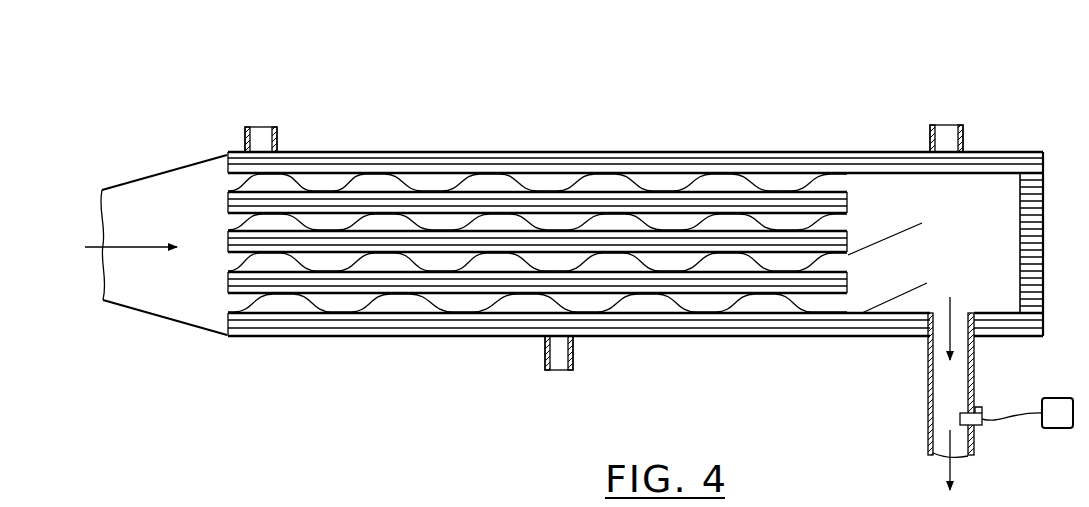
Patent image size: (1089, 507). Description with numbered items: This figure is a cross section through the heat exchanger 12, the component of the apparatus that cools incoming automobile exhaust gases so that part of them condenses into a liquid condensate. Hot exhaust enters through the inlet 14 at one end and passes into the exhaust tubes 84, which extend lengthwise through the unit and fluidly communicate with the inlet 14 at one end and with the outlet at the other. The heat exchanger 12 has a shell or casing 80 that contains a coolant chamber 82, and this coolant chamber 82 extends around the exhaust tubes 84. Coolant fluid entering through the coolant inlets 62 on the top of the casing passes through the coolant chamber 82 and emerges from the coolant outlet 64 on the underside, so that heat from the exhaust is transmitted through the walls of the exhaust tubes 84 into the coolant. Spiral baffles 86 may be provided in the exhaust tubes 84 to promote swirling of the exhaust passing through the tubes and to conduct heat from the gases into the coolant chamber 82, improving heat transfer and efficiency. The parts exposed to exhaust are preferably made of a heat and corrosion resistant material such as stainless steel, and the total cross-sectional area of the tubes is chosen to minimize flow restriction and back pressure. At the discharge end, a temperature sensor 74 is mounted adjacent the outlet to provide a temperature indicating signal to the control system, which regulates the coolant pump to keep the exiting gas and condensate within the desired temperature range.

The heat exchanger 12 is at (163, 362).
The inlet 14 is at (100, 273).
The coolant inlet 62 is at (263, 127).
The coolant outlet 64 is at (549, 370).
The temperature sensor 74 is at (966, 400).
The shell or casing 80 is at (755, 152).
The coolant chamber 82 is at (378, 158).
The exhaust tubes 84 is at (533, 176).
The spiral baffles 86 is at (636, 185).